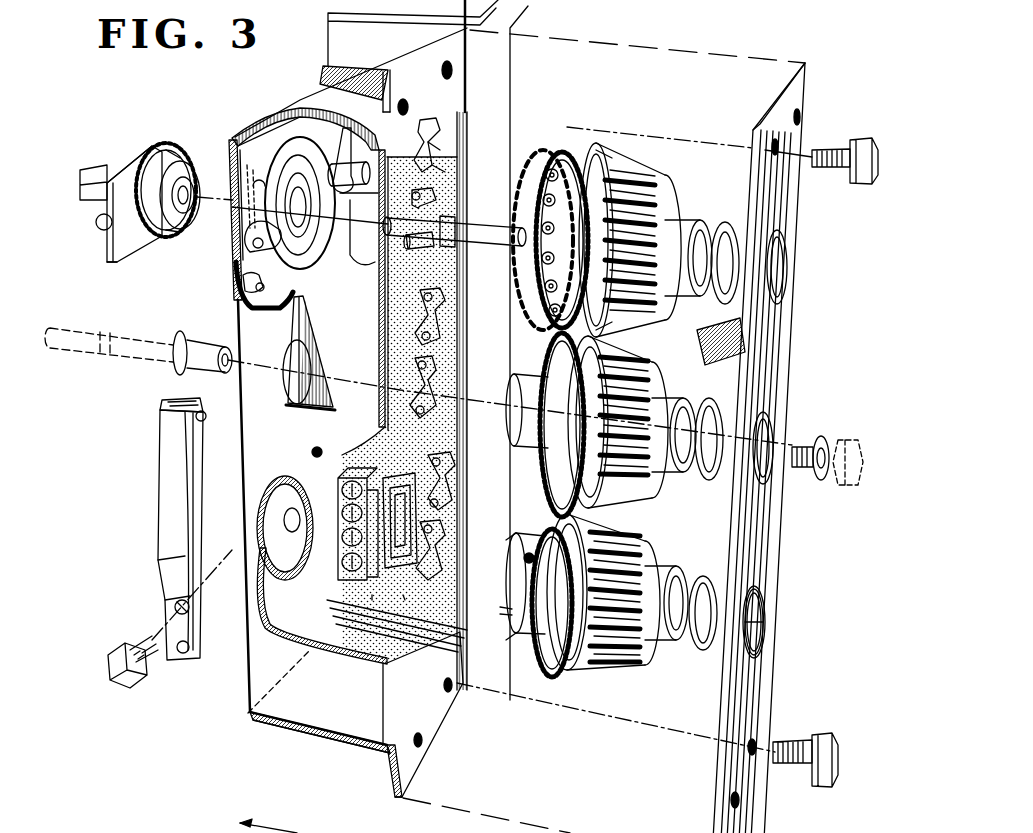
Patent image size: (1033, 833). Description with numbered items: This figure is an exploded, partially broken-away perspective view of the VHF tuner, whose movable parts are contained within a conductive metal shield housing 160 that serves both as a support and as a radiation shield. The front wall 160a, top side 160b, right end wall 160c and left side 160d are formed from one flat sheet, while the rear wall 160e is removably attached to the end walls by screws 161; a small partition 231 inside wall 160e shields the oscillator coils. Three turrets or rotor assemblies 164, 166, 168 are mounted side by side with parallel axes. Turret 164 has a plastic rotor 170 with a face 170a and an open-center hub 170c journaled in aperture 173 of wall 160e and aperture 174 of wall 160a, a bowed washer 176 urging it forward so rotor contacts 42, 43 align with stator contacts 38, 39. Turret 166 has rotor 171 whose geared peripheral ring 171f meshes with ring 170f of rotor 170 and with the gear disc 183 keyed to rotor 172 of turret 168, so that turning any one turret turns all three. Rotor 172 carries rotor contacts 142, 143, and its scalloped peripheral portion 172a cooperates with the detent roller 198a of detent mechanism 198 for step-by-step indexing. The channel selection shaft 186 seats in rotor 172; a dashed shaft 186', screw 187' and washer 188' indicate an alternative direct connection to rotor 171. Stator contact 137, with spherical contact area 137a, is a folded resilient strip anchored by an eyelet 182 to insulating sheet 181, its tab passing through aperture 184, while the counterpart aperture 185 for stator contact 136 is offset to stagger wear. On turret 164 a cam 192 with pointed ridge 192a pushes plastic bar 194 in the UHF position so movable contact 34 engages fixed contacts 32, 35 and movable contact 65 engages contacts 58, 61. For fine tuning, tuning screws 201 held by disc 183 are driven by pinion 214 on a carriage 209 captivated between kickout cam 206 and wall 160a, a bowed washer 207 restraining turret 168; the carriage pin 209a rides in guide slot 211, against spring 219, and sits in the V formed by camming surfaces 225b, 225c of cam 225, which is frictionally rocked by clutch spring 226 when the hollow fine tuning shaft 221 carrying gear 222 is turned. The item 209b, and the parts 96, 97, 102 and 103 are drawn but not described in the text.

The shield housing 160 is at (347, 705).
The front wall 160a is at (233, 173).
The top side 160b is at (360, 720).
The right end wall 160c is at (411, 670).
The left side 160d is at (298, 104).
The rear wall 160e is at (806, 64).
The screws 161 is at (864, 147).
The rotor assembly 164 is at (660, 607).
The rotor assembly 166 is at (620, 423).
The rotor assembly 168 is at (646, 208).
The rotor 170 is at (578, 548).
The face 170a is at (660, 570).
The hub 170c is at (750, 638).
The peripheral ring 170f is at (535, 655).
The rotor 171 is at (592, 372).
The peripheral ring 171f is at (560, 380).
The rotor 172 is at (622, 172).
The peripheral portion 172a is at (608, 165).
The aperture 173 is at (762, 621).
The aperture 174 is at (294, 518).
The bowed washer 176 is at (718, 585).
The insulating sheet 181 is at (458, 432).
The eyelet 182 is at (455, 135).
The gear disc 183 is at (596, 160).
The aperture 184 is at (468, 160).
The aperture 185 is at (470, 176).
The channel selection tuning shaft 186 is at (379, 239).
The tuning shaft 186' is at (138, 354).
The screw 187' is at (861, 440).
The washer 188' is at (536, 420).
The cam element 192 is at (530, 630).
The pointed ridge portion 192a is at (523, 632).
The plastic bar 194 is at (372, 595).
The detent mechanism 198 is at (162, 536).
The detent roller 198a is at (178, 391).
The tuning screw 201 is at (522, 230).
The kickout cam 206 is at (522, 205).
The bowed washer 207 is at (738, 235).
The carriage 209 is at (254, 123).
The pin 209a is at (250, 226).
The clip 209b is at (348, 150).
The guide slot 211 is at (250, 261).
The pinion 214 is at (386, 72).
The spring 219 is at (242, 286).
The fine tuning hollow shaft 221 is at (92, 202).
The gear 222 is at (183, 145).
The cam 225 is at (113, 207).
The camming surface 225b is at (122, 170).
The camming surface 225c is at (110, 249).
The clutch spring 226 is at (100, 238).
The partition 231 is at (760, 333).
The fixed contact 32 is at (342, 530).
The movable contact 34 is at (393, 490).
The fixed contact 35 is at (346, 540).
The stator contact 38 is at (435, 490).
The stator contact 39 is at (440, 556).
The rotor contact 42 is at (656, 531).
The rotor contact 43 is at (652, 548).
The fixed contact 58 is at (340, 488).
The fixed contact 61 is at (350, 562).
The movable contact 65 is at (404, 595).
The lever 96 is at (430, 392).
The lever 97 is at (418, 320).
The hub 102 is at (670, 398).
The ring 103 is at (675, 375).
The stator contact 136 is at (412, 249).
The stator contact 137 is at (440, 158).
The contact area 137a is at (408, 104).
The rotor contact 142 is at (676, 215).
The rotor contact 143 is at (648, 175).